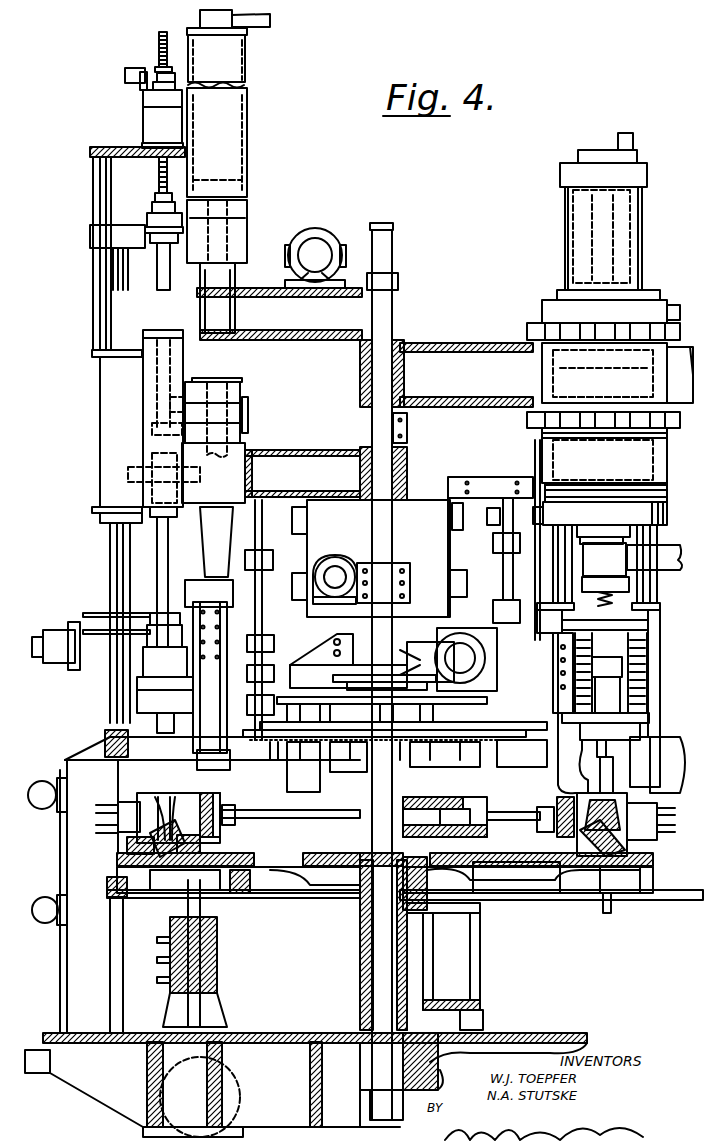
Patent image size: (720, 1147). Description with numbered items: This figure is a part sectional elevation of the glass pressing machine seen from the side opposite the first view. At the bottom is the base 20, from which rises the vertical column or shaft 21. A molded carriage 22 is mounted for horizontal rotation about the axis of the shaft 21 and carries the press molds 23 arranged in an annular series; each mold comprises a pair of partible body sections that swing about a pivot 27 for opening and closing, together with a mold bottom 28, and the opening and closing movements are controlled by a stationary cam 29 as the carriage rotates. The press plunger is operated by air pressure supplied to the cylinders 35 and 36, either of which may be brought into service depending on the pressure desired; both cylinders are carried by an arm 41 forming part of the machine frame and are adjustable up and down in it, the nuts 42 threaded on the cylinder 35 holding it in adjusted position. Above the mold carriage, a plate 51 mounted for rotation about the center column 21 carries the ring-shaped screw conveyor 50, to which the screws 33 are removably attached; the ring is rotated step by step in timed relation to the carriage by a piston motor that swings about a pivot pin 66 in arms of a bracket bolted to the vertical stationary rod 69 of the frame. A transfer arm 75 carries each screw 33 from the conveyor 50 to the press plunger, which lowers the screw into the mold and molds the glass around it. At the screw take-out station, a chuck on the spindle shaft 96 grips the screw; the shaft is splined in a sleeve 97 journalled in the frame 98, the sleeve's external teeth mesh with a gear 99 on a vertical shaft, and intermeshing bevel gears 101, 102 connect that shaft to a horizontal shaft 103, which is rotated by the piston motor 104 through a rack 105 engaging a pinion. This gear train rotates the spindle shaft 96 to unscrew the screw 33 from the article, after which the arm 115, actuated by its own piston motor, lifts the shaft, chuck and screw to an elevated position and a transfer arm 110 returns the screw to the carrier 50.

The base 20 is at (283, 1032).
The vertical column or shaft 21 is at (385, 945).
The mold carriage 22 is at (113, 860).
The press molds 23 is at (157, 797).
The pivot 27 is at (207, 800).
The mold bottom 28 is at (185, 797).
The stationary cam 29 is at (440, 797).
The screws 33 is at (613, 777).
The cylinder 35 is at (553, 450).
The cylinder 36 is at (577, 228).
The arm 41 is at (485, 343).
The nuts 42 is at (535, 330).
The screw conveyor 50 is at (432, 740).
The plate 51 is at (280, 697).
The pivot pin 66 is at (493, 620).
The vertical stationary rod 69 is at (503, 567).
The transfer arm 75 is at (563, 770).
The chuck spindle shaft 96 is at (157, 537).
The sleeve 97 is at (140, 453).
The frame 98 is at (247, 447).
The gear 99 is at (128, 473).
The bevel gear 101 is at (153, 423).
The bevel gear 102 is at (180, 403).
The horizontal shaft 103 is at (240, 400).
The piston motor 104 is at (237, 128).
The rack 105 is at (233, 397).
The transfer arm 110 is at (197, 743).
The arm 115 is at (107, 233).